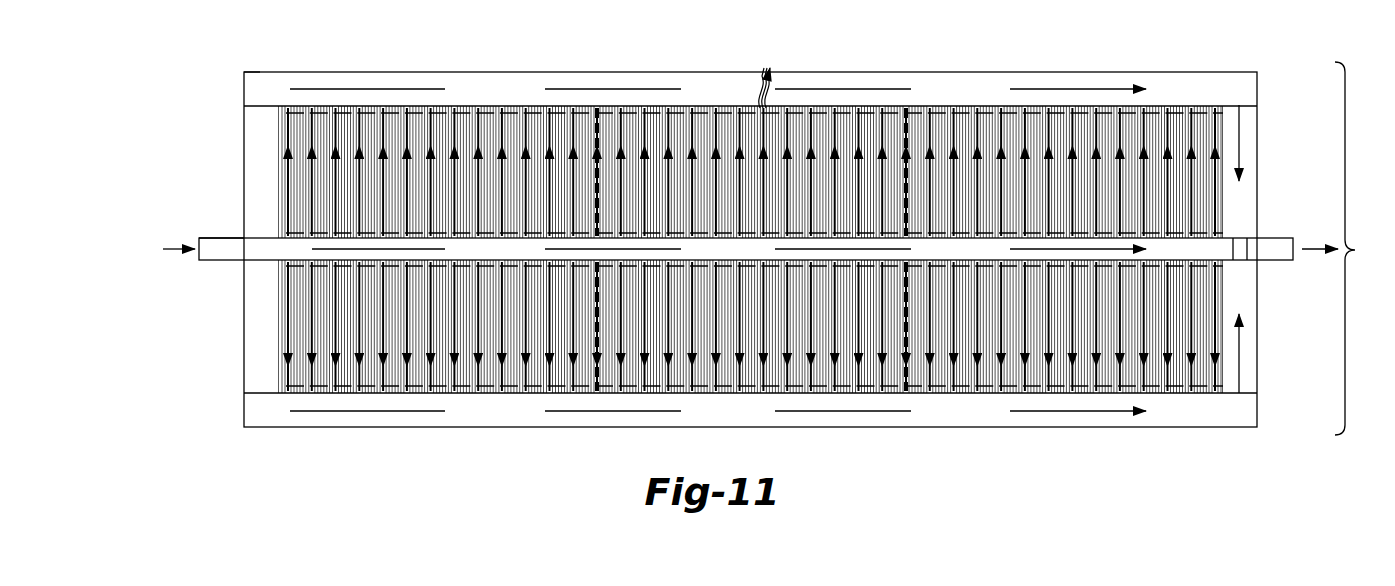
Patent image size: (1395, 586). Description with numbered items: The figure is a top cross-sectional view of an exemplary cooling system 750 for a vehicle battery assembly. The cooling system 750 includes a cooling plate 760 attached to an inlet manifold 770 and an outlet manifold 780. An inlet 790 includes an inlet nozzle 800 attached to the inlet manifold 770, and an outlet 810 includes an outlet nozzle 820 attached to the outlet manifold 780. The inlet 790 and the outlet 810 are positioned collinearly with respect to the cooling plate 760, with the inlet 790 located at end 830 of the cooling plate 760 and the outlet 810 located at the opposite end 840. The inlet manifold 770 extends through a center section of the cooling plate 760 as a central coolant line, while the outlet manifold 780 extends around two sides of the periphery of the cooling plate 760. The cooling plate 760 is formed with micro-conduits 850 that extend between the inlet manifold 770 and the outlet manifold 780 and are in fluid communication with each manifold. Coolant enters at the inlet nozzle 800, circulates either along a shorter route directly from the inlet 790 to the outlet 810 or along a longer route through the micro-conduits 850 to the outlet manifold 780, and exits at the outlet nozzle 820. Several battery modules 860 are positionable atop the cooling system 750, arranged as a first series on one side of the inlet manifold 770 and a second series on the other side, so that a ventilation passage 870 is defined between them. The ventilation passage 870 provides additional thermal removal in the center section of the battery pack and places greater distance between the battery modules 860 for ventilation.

The cooling system 750 is at (1365, 248).
The cooling plate 760 is at (258, 351).
The inlet manifold 770 is at (270, 247).
The outlet manifold 780 is at (582, 78).
The inlet 790 is at (222, 287).
The inlet nozzle 800 is at (212, 237).
The outlet 810 is at (1270, 270).
The outlet nozzle 820 is at (1280, 238).
The end of cooling plate 830 is at (180, 101).
The end of cooling plate 840 is at (1247, 32).
The micro-conduits 850 is at (763, 76).
The battery modules 860 is at (475, 105).
The ventilation passage 870 is at (730, 251).